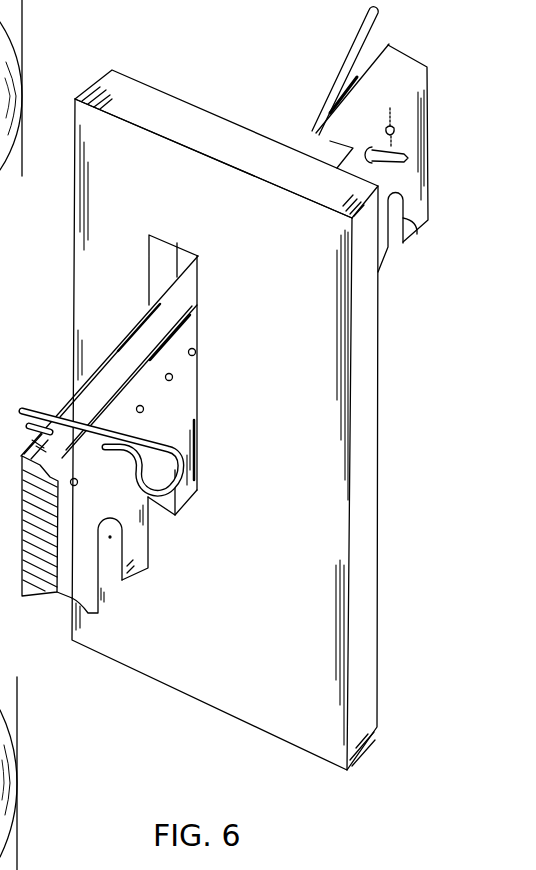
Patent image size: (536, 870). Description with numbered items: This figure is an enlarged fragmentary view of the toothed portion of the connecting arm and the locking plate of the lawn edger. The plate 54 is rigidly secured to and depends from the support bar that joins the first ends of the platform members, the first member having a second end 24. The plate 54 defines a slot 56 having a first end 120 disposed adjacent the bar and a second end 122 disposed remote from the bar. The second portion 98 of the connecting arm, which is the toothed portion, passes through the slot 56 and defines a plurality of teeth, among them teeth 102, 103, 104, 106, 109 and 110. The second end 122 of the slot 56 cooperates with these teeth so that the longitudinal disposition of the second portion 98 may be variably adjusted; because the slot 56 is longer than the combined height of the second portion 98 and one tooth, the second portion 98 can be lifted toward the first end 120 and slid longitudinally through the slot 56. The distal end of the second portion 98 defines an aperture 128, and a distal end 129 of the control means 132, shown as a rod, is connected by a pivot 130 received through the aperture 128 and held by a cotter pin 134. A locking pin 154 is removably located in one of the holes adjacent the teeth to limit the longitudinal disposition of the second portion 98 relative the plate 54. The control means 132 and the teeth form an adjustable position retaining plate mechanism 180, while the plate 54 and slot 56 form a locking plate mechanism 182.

The second end 24 is at (128, 350).
The plate 54 is at (333, 580).
The slot 56 is at (149, 270).
The second portion 98 is at (115, 498).
The tooth 102 is at (105, 593).
The tooth 103 is at (152, 532).
The tooth 104 is at (197, 478).
The tooth 106 is at (0, 233).
The tooth 109 is at (0, 186).
The tooth 110 is at (412, 247).
The first end 120 is at (172, 234).
The second end 122 is at (198, 448).
The aperture 128 is at (340, 143).
The distal end 129 is at (330, 108).
The pivot 130 is at (357, 174).
The control means 132 is at (349, 52).
The cotter pin 134 is at (385, 123).
The locking pin 154 is at (70, 420).
The adjustable position retaining plate mechanism 180 is at (194, 508).
The locking plate mechanism 182 is at (213, 333).